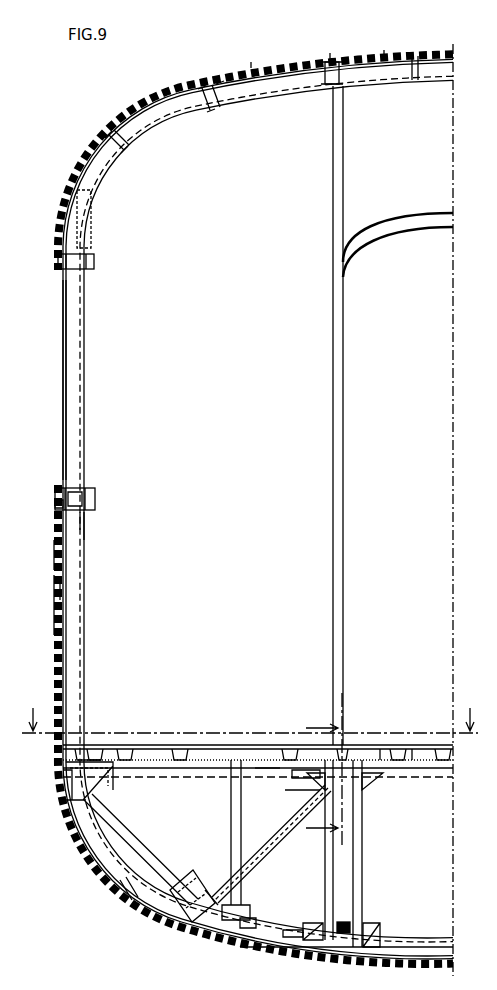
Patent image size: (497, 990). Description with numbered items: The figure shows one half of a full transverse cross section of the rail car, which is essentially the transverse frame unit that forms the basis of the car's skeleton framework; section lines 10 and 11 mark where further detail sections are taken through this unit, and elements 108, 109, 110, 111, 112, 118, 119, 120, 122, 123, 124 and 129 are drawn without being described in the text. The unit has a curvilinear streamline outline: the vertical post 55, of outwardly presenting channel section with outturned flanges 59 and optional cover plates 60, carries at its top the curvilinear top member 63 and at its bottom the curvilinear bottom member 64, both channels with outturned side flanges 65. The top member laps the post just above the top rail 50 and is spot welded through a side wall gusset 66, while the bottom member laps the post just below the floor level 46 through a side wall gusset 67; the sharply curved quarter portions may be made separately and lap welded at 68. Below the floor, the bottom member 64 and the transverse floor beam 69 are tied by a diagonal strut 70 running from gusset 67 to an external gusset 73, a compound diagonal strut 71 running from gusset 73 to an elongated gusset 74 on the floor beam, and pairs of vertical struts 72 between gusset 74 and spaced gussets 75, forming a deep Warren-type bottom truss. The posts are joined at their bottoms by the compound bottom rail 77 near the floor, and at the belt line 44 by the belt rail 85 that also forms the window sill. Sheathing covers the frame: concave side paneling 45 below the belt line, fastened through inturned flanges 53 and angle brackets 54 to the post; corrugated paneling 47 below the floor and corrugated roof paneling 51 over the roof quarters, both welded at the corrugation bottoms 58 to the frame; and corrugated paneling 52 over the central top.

The section line 10- 10 is at (250, 711).
The section line 11- 11 is at (315, 770).
The belt line 44 is at (55, 496).
The concavely cross sectioned paneling 45 is at (56, 614).
The floor level 46 is at (143, 758).
The corrugated paneling 47 is at (163, 915).
The top rail 50 is at (58, 262).
The corrugated roof paneling 51 is at (190, 79).
The corrugated paneling 52 is at (384, 50).
The inturned flanges 53 is at (56, 556).
The angle brackets 54 is at (56, 600).
The vertical members 55 is at (82, 530).
The bottoms of the corrugations 58 is at (252, 62).
The outturned flanges 59 is at (68, 405).
The cover plates 60 is at (65, 352).
The top member 63 is at (160, 120).
The bottom member 64 is at (72, 832).
The outturned side flanges 65 is at (416, 64).
The side wall gusset 66 is at (88, 212).
The side wall gusset 67 is at (88, 724).
The lap joint 68 is at (228, 96).
The floor beam 69 is at (270, 768).
The diagonal strut 70 is at (150, 860).
The compound diagonal strut 71 is at (252, 850).
The vertical struts 72 is at (358, 880).
The external gusset 73 is at (198, 890).
The elongated gusset 74 is at (306, 780).
The spaced gussets 75 is at (314, 928).
The bottom rail 77 is at (95, 748).
The belt rail 85 is at (56, 504).
The bracket 108 is at (326, 78).
The deck stiffener 109 is at (394, 749).
The hat stiffeners 110 is at (195, 745).
The column deck connection 111 is at (348, 756).
The base block 112 is at (352, 924).
The column 118 is at (336, 455).
The lower column 119 is at (238, 755).
The brace connection 120 is at (222, 890).
The gusset 122 is at (416, 772).
The bracket 123 is at (290, 792).
The deck girder 124 is at (163, 772).
The shell bump 129 is at (330, 52).